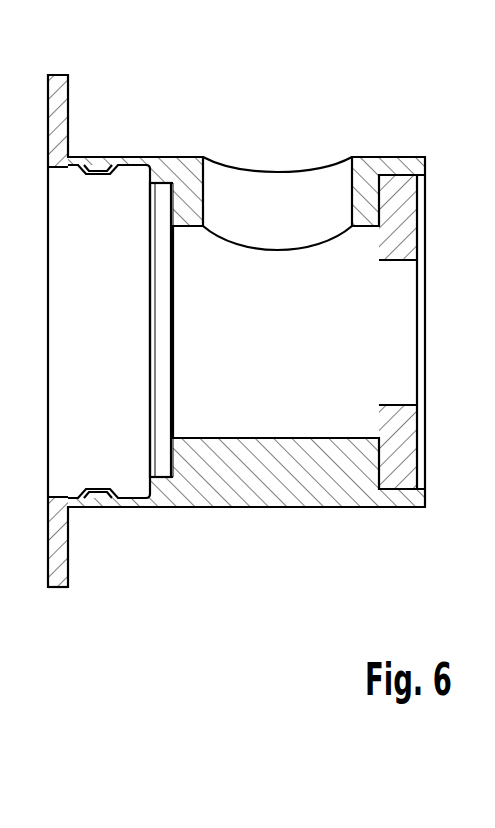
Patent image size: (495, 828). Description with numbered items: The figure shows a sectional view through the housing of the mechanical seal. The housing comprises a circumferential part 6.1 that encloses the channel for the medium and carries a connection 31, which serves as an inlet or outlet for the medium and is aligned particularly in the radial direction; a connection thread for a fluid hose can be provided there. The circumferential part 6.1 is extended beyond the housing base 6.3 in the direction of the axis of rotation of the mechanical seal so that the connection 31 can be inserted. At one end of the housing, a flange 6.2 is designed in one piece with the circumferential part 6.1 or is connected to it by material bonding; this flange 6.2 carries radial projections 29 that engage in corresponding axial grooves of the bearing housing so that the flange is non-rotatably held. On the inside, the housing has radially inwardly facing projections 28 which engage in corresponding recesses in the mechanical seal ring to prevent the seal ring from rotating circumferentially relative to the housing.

The connection 31 is at (339, 102).
The circumferential part 6.1 is at (314, 507).
The flange 6.2 is at (65, 545).
The housing base 6.3 is at (166, 454).
The radially inwardly facing projections 28 is at (98, 176).
The radial projections 29 is at (60, 578).